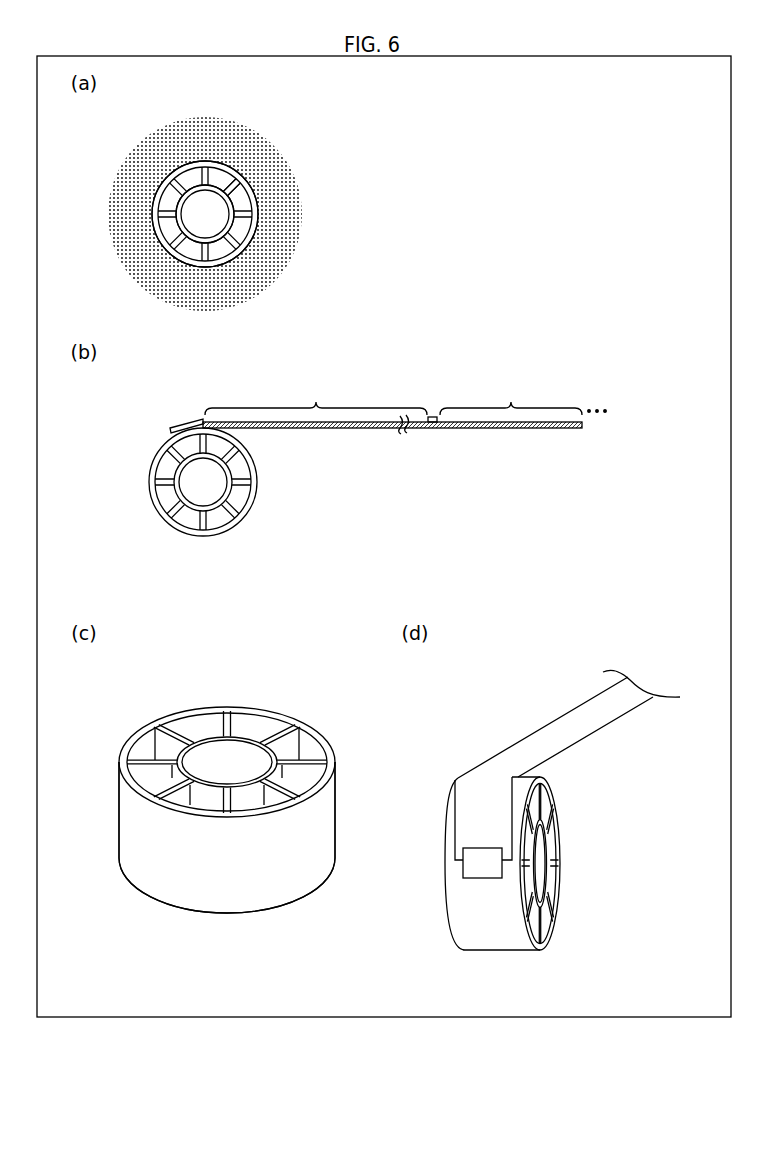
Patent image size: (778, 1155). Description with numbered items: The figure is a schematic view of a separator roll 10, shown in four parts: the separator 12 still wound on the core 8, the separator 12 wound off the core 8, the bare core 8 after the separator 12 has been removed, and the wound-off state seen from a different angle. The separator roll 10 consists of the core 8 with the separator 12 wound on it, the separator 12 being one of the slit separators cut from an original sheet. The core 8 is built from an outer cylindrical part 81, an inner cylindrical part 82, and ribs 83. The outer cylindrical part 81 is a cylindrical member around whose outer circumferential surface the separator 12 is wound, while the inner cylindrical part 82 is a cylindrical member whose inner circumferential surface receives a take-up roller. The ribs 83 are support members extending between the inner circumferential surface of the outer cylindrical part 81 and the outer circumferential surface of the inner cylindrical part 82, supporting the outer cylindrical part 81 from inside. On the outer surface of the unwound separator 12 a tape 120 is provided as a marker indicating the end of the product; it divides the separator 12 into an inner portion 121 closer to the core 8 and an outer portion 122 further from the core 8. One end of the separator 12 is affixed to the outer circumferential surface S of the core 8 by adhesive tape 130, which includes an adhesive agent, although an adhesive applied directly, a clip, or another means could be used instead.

The core 8 is at (338, 160).
The outer cylindrical part 81 is at (243, 172).
The inner cylindrical part 82 is at (233, 205).
The ribs 83 is at (240, 188).
The separator roll 10 is at (366, 175).
The separator 12 is at (297, 233).
The tape 120 is at (432, 416).
The inner portion 121 is at (538, 743).
The outer portion 122 is at (523, 398).
The adhesive tape 130 is at (190, 425).
The outer circumferential surface S is at (232, 895).